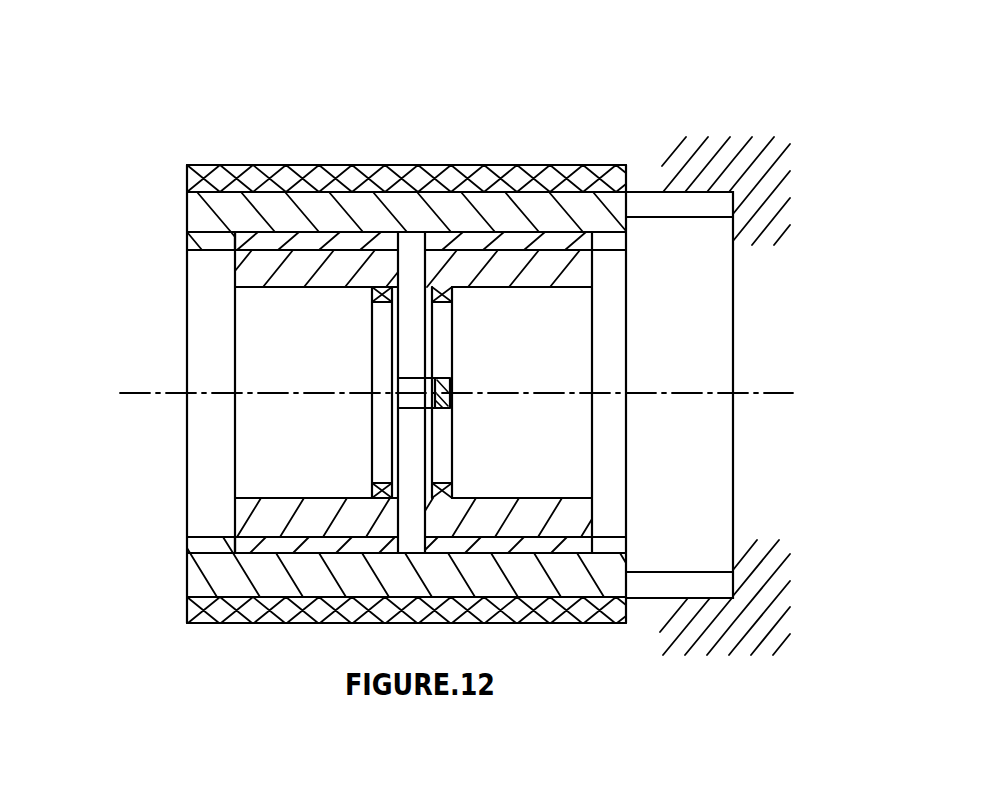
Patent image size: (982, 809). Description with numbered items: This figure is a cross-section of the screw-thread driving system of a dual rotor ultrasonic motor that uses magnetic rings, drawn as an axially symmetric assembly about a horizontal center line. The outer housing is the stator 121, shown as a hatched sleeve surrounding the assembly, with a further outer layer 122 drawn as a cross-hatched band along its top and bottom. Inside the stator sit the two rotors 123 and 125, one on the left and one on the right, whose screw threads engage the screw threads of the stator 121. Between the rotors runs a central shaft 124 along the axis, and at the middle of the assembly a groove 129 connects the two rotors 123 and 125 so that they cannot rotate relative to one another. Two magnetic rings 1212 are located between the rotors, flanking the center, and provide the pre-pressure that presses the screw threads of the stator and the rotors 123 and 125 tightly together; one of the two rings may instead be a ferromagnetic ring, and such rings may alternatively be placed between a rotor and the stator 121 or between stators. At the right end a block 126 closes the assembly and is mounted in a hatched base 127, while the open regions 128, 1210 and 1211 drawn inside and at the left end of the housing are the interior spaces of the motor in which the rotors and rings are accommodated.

The stator 121 is at (228, 212).
The outer sleeve / insulating layer 122 is at (291, 186).
The rotor 123 is at (347, 267).
The piston rod 124 is at (415, 263).
The rotor 125 is at (512, 270).
The end block 126 is at (662, 202).
The mounting base / ground 127 is at (740, 172).
The right chamber 128 is at (518, 352).
The groove 129 is at (413, 399).
The left chamber 1210 is at (283, 455).
The end cavity 1211 is at (207, 383).
The magnetic rings 1212 is at (442, 362).